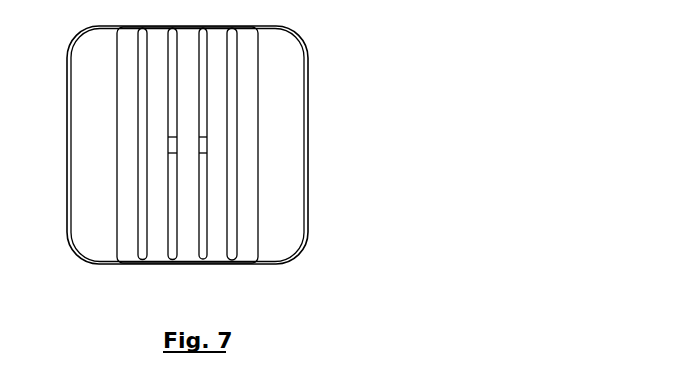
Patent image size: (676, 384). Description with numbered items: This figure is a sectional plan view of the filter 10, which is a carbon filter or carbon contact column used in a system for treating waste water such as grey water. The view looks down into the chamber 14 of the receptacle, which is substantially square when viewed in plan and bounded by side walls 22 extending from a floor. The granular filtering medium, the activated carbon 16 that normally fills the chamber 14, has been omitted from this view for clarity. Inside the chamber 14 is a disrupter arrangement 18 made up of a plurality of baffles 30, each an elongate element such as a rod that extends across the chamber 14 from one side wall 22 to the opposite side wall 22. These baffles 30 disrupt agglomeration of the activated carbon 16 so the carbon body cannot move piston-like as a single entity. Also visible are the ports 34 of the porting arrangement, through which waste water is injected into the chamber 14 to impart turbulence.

The filter 10 is at (297, 171).
The chamber 14 is at (283, 146).
The activated carbon 16 is at (307, 225).
The disrupter arrangement 18 is at (124, 257).
The side walls 22 is at (229, 264).
The baffles 30 is at (179, 172).
The ports 34 is at (222, 124).